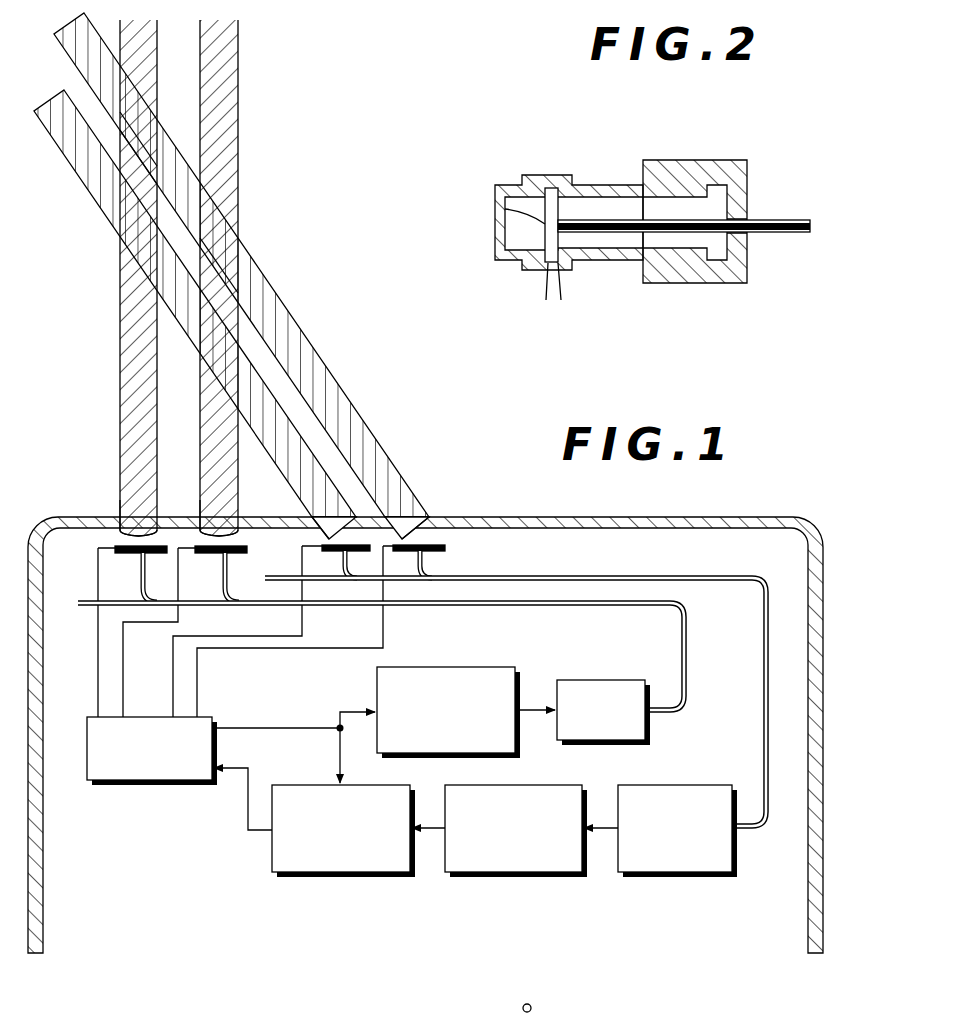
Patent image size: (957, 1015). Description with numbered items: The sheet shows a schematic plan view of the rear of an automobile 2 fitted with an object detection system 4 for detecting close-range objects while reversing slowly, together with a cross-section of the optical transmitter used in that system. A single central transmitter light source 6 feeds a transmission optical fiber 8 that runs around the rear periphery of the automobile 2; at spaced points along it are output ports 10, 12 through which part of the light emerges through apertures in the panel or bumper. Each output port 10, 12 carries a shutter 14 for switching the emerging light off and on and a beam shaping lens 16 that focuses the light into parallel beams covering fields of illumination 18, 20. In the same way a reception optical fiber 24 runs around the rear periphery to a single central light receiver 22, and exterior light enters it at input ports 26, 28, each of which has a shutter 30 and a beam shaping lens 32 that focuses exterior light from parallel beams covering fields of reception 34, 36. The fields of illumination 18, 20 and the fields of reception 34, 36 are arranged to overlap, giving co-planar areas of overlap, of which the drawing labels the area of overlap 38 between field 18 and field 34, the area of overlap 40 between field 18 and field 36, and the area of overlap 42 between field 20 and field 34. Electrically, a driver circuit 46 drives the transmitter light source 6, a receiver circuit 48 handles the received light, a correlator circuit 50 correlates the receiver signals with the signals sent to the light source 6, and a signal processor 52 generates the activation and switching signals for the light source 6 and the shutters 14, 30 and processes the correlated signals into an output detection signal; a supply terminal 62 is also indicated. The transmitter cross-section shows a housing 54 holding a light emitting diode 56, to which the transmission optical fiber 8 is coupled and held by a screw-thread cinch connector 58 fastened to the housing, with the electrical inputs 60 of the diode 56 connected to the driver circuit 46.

In FIG. 1, the automobile 2 is at (596, 517).
In FIG. 1, the object detection system 4 is at (695, 944).
In FIG. 1, the transmitter light source 6 is at (600, 680).
In FIG. 2, the transmitter light source 6 is at (607, 146).
In FIG. 1, the transmission optical fiber 8 is at (78, 606).
In FIG. 2, the transmission optical fiber 8 is at (780, 218).
In FIG. 1, the output port 10 is at (122, 517).
In FIG. 1, the output port 12 is at (200, 517).
In FIG. 1, the shutter 14 is at (130, 556).
In FIG. 1, the beam shaping lens 16 is at (138, 528).
In FIG. 1, the field of illumination 18 is at (120, 313).
In FIG. 1, the field of illumination 20 is at (239, 100).
In FIG. 1, the light receiver 22 is at (684, 785).
In FIG. 1, the reception optical fiber 24 is at (573, 576).
In FIG. 1, the input port 26 is at (308, 515).
In FIG. 1, the input port 28 is at (432, 515).
In FIG. 1, the shutter 30 is at (320, 546).
In FIG. 1, the beam shaping lens 32 is at (352, 525).
In FIG. 1, the field of reception 34 is at (62, 162).
In FIG. 1, the field of reception 36 is at (273, 288).
In FIG. 1, the area of overlap 38 is at (118, 241).
In FIG. 1, the area of overlap 40 is at (143, 118).
In FIG. 1, the area of overlap 42 is at (218, 338).
In FIG. 1, the driver circuit 46 is at (445, 667).
In FIG. 1, the receiver circuit 48 is at (522, 878).
In FIG. 1, the correlator circuit 50 is at (344, 878).
In FIG. 1, the signal processor 52 is at (160, 787).
In FIG. 2, the housing 54 is at (505, 180).
In FIG. 2, the light emitting diode 56 is at (505, 213).
In FIG. 2, the cinch connector 58 is at (706, 160).
In FIG. 2, the electrical inputs 60 is at (546, 291).
In FIG. 1, the supply voltage terminal 62 is at (522, 1008).